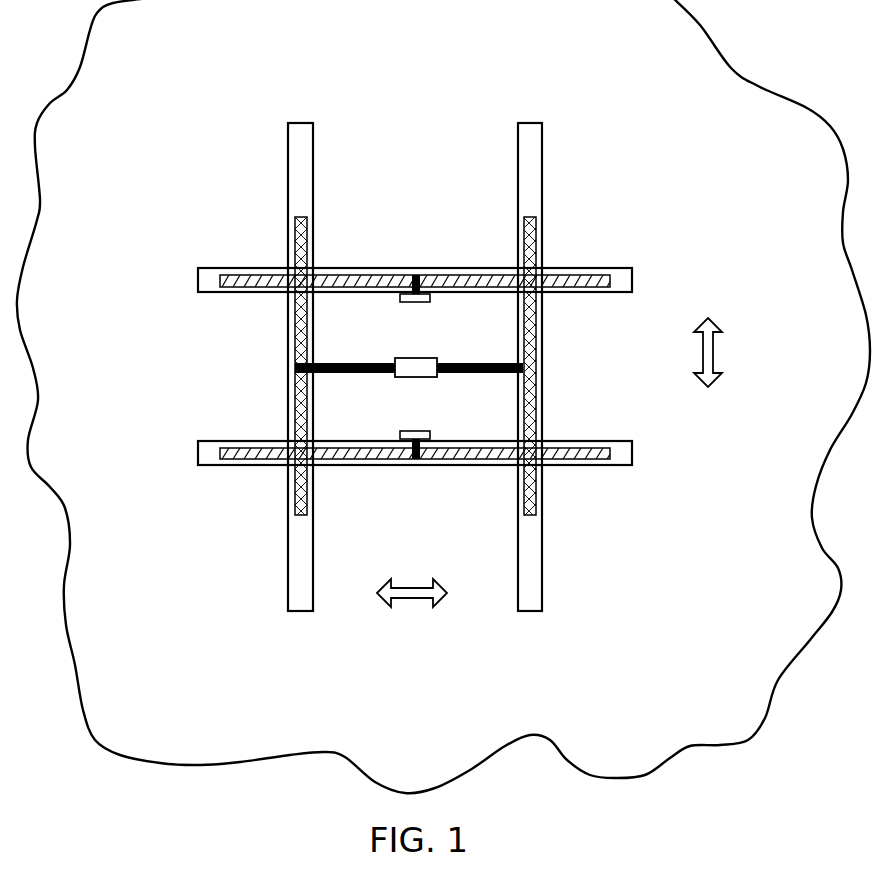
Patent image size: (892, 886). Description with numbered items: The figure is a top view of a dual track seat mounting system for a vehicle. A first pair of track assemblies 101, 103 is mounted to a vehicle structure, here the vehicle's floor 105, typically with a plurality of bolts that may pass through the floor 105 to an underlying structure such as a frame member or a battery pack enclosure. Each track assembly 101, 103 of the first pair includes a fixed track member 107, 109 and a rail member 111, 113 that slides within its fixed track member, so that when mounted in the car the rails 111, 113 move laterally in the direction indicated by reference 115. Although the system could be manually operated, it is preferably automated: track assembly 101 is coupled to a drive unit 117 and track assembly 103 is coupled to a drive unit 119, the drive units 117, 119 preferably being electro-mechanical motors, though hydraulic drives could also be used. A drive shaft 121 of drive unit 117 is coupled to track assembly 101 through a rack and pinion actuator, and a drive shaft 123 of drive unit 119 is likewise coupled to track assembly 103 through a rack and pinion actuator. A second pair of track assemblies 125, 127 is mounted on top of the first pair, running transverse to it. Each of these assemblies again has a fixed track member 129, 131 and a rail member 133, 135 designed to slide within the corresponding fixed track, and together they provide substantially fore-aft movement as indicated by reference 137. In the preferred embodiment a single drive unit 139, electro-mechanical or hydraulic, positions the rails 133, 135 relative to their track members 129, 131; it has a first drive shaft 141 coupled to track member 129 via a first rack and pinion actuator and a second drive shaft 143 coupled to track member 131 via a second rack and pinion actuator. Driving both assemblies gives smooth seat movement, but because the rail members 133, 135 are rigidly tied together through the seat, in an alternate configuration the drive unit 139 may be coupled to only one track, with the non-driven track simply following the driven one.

The track assembly 101 is at (444, 274).
The track assembly 103 is at (440, 443).
The vehicle floor 105 is at (450, 36).
The fixed track member 107 is at (620, 293).
The fixed track member 109 is at (620, 466).
The rail member 111 is at (567, 287).
The rail member 113 is at (570, 460).
The lateral movement direction 115 is at (415, 600).
The drive unit 117 is at (416, 303).
The drive unit 119 is at (413, 432).
The drive shaft 121 is at (440, 276).
The drive shaft 123 is at (400, 443).
The track assembly 125 is at (324, 353).
The track assembly 127 is at (514, 350).
The fixed track member 129 is at (297, 135).
The fixed track member 131 is at (528, 133).
The rail member 133 is at (299, 237).
The rail member 135 is at (534, 232).
The fore-aft movement direction 137 is at (708, 352).
The drive unit 139 is at (418, 358).
The first drive shaft 141 is at (374, 362).
The second drive shaft 143 is at (452, 362).